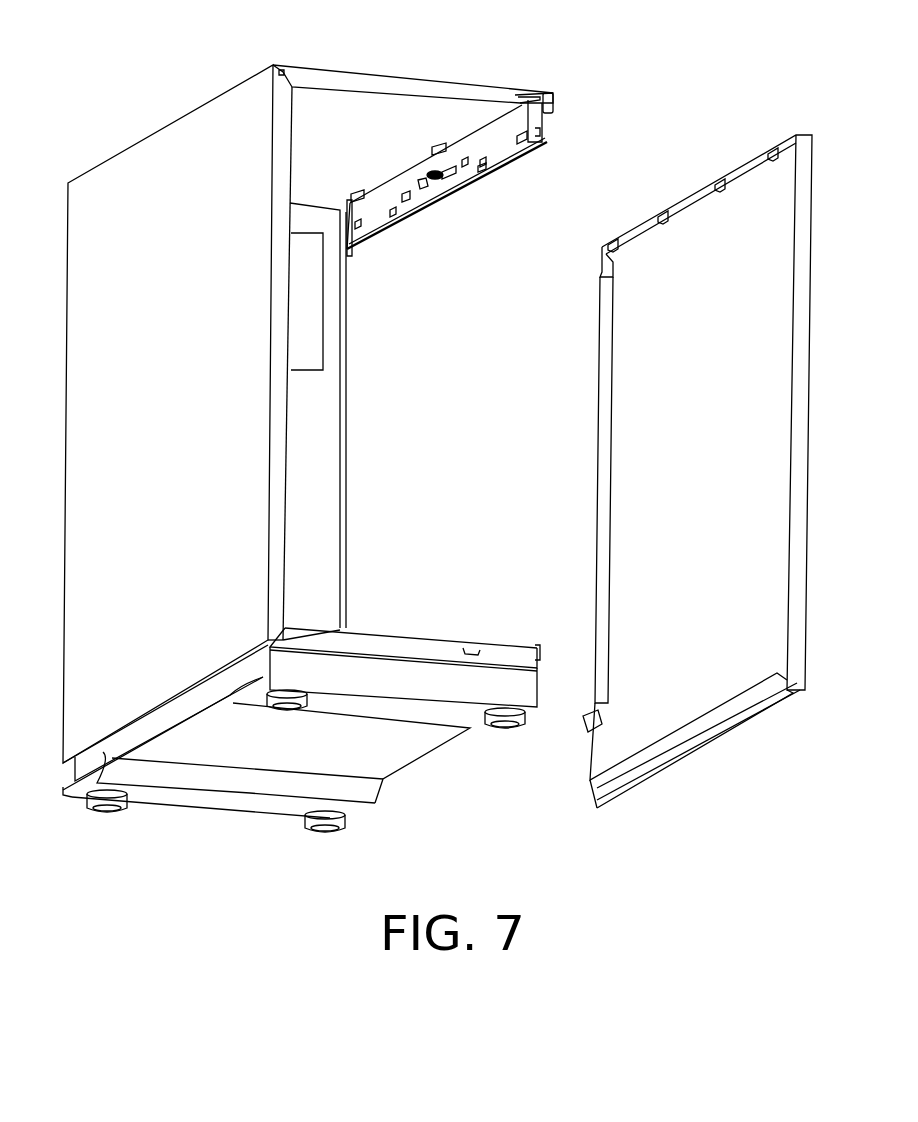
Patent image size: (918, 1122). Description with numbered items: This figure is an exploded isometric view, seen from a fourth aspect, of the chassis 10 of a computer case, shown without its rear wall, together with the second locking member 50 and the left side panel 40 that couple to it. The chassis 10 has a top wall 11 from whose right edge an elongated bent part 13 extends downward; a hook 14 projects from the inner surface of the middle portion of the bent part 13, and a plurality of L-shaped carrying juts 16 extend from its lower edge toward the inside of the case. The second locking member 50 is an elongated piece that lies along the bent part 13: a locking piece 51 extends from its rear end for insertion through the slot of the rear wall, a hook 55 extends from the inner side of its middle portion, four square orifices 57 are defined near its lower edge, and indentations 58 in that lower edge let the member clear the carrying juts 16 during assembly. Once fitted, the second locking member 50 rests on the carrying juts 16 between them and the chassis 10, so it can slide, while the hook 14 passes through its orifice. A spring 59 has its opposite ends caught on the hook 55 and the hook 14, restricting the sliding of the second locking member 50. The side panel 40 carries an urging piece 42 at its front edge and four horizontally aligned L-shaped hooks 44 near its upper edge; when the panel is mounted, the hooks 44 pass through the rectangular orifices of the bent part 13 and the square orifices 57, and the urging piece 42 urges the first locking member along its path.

The chassis 10 is at (167, 105).
The top wall 11 is at (427, 77).
The bent part 13 is at (556, 106).
The hook 14 is at (452, 172).
The carrying juts 16 is at (484, 167).
The side panel 40 is at (580, 483).
The urging piece 42 is at (585, 725).
The hooks 44 is at (662, 213).
The second locking member 50 is at (378, 213).
The locking piece 51 is at (525, 95).
The hook 55 is at (422, 186).
The square orifices 57 is at (352, 250).
The indentations 58 is at (505, 150).
The spring 59 is at (440, 178).